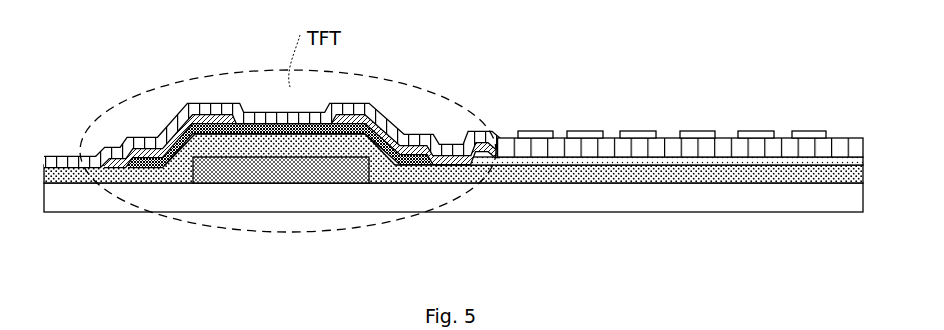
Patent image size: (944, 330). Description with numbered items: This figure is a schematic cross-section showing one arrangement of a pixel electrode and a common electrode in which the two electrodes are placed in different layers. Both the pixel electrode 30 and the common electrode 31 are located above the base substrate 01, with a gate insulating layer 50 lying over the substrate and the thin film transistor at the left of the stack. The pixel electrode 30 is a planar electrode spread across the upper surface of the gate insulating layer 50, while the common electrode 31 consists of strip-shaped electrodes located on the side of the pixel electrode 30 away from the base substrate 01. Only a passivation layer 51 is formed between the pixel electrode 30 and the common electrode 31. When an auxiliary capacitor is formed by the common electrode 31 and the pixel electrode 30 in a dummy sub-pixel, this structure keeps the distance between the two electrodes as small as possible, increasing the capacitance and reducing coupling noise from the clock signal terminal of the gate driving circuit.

The base substrate 01 is at (580, 197).
The gate insulating layer 50 is at (643, 170).
The pixel electrode 30 is at (732, 158).
The passivation layer 51 is at (812, 148).
The common electrode 31 is at (753, 133).